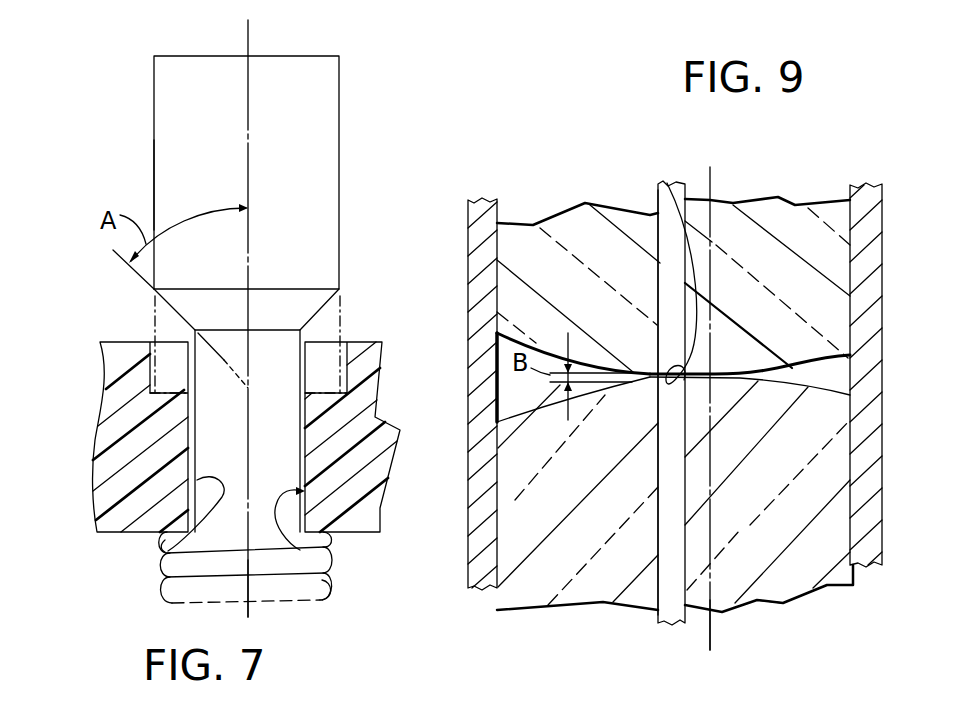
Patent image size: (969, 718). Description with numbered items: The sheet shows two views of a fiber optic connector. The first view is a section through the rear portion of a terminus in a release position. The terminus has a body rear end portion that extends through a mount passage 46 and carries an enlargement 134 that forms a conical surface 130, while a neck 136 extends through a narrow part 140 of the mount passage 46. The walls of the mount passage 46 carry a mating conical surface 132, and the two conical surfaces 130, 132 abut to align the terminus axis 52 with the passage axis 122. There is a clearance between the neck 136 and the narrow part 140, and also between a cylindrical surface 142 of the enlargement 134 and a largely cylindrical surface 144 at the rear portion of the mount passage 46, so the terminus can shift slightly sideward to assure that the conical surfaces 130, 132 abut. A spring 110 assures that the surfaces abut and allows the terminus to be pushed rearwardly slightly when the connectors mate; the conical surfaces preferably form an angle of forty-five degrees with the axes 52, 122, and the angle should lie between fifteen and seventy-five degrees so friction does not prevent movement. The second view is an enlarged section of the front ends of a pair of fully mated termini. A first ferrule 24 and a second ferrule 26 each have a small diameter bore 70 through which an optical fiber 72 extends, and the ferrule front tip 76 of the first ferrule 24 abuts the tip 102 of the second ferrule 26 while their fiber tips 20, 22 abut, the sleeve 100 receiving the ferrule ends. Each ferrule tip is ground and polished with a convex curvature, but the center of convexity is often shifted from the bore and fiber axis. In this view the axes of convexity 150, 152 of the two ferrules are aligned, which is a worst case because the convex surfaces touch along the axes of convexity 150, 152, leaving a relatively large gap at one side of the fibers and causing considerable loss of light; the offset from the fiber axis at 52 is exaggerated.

In FIG. 7, the terminus axis 52 is at (248, 54).
In FIG. 7, the cylindrical surface 142 is at (154, 122).
In FIG. 7, the enlargement 134 is at (154, 181).
In FIG. 7, the conical surface 130 is at (323, 309).
In FIG. 7, the conical surface 132 is at (328, 402).
In FIG. 7, the cylindrical surface 144 is at (152, 358).
In FIG. 7, the neck 136 is at (190, 448).
In FIG. 7, the mount passage 46 is at (327, 552).
In FIG. 7, the narrow part 140 is at (167, 548).
In FIG. 7, the spring 110 is at (330, 583).
In FIG. 7, the passage axis 122 is at (249, 590).
In FIG. 9, the sleeve 100 is at (467, 225).
In FIG. 9, the ferrule 24 is at (797, 203).
In FIG. 9, the fiber tip 22 is at (645, 378).
In FIG. 9, the ferrule front tip 76 is at (497, 350).
In FIG. 9, the ferrule tip 102 is at (520, 405).
In FIG. 9, the fiber tip 20 is at (660, 258).
In FIG. 9, the small diameter bore 70 is at (666, 182).
In FIG. 9, the optical fiber 72 is at (658, 192).
In FIG. 9, the axis of convexity 150 is at (710, 182).
In FIG. 9, the axis of convexity 152 is at (710, 622).
In FIG. 9, the ferrule 26 is at (795, 601).